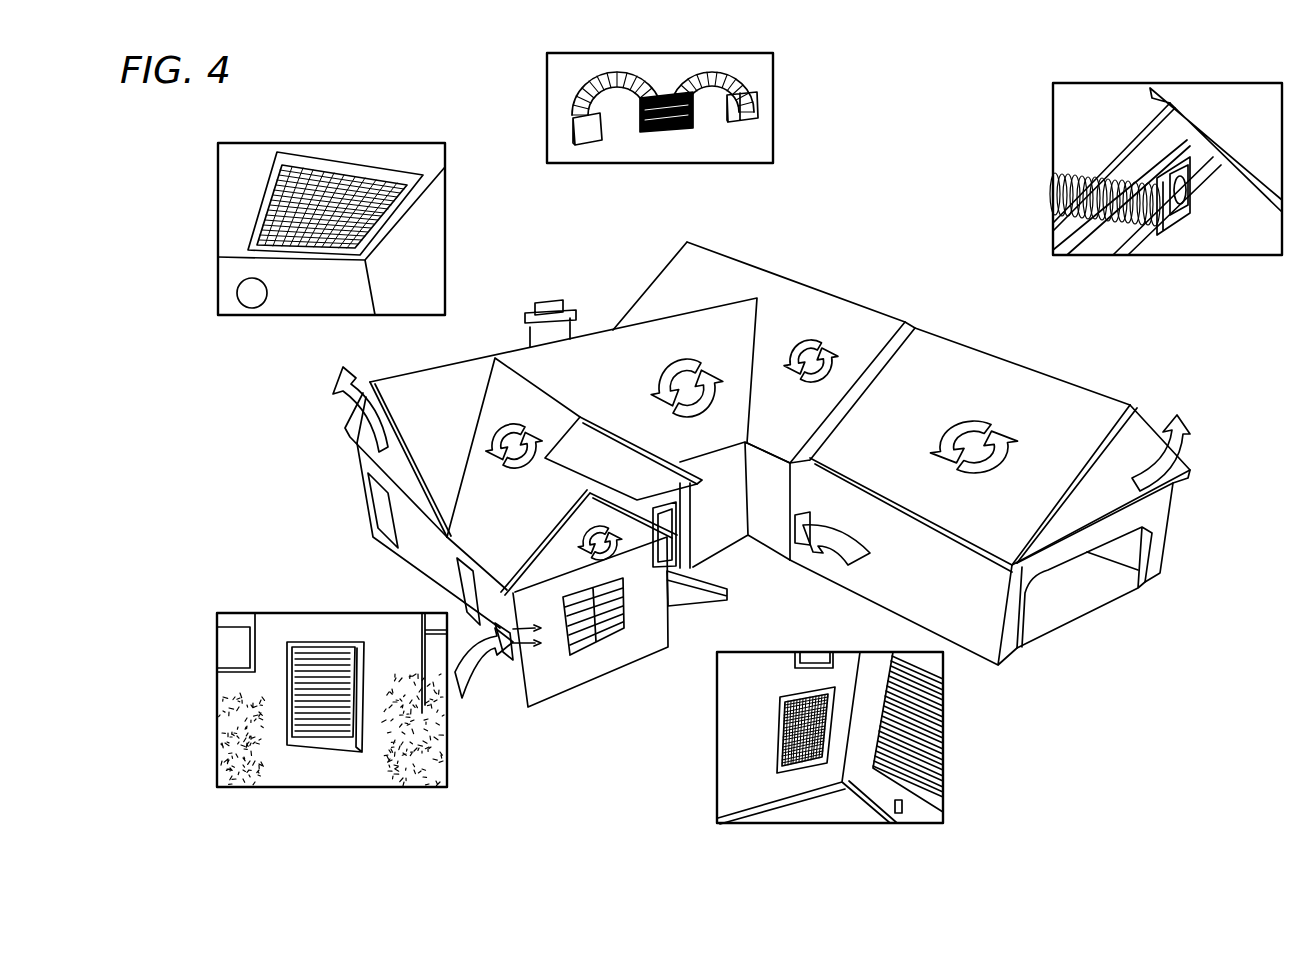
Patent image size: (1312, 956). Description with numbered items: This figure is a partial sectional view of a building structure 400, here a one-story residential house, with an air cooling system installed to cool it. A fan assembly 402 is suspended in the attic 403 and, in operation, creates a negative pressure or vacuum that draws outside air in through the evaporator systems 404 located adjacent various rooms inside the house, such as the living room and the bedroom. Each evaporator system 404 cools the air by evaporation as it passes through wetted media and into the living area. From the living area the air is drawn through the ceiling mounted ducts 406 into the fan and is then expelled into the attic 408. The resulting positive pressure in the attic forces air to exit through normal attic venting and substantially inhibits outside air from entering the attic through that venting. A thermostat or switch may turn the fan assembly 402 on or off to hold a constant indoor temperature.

The building structure 400 is at (897, 292).
The fan assembly 402 is at (753, 103).
The attic 403 is at (1205, 83).
The evaporator systems 404 is at (505, 668).
The ceiling mounted ducts 406 is at (1053, 183).
The attic 408 is at (395, 398).